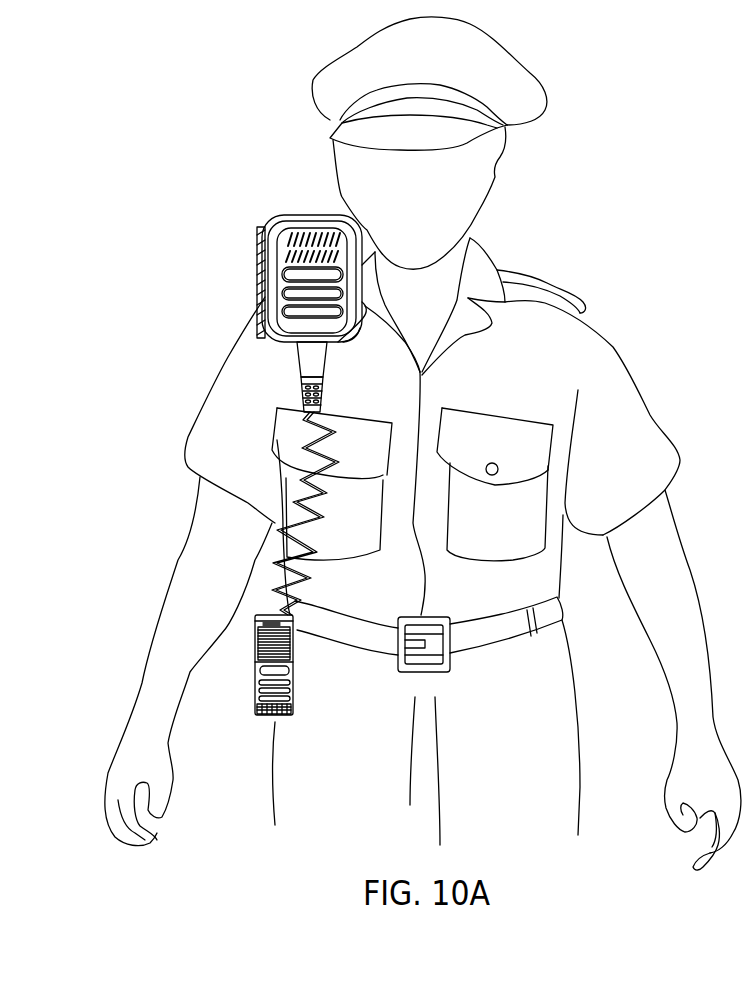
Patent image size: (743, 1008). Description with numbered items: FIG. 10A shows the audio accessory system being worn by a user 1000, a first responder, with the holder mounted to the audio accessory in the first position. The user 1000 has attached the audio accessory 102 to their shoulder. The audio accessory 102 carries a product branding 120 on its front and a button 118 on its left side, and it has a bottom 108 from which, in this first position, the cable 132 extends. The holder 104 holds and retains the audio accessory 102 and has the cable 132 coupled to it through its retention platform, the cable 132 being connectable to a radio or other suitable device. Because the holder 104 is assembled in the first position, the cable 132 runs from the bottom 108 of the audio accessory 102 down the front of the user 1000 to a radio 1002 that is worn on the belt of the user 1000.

The user 1000 is at (613, 345).
The audio accessory 102 is at (285, 292).
The product branding 120 is at (307, 238).
The button 118 is at (257, 243).
The bottom 108 is at (343, 343).
The holder 104 is at (317, 358).
The cable 132 is at (285, 408).
The radio 1002 is at (255, 660).